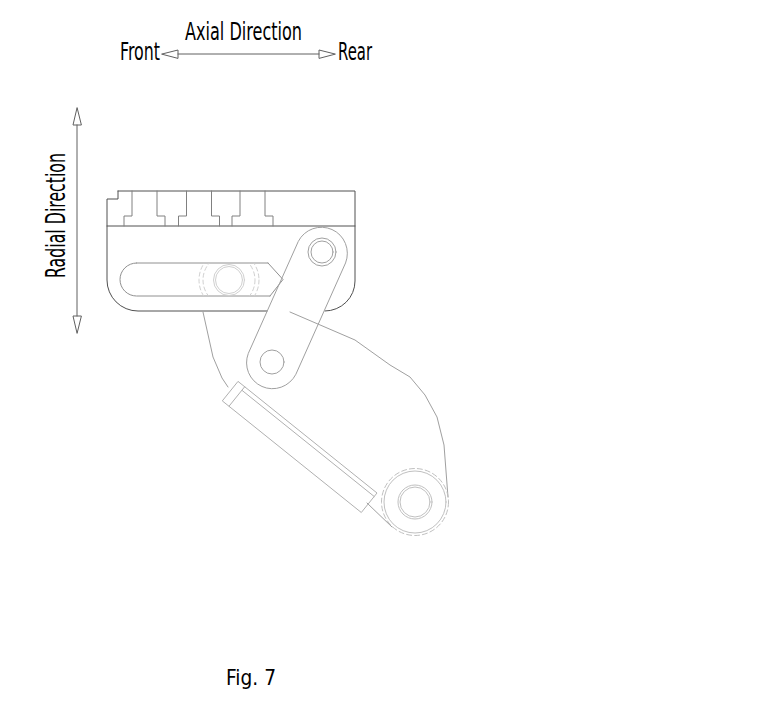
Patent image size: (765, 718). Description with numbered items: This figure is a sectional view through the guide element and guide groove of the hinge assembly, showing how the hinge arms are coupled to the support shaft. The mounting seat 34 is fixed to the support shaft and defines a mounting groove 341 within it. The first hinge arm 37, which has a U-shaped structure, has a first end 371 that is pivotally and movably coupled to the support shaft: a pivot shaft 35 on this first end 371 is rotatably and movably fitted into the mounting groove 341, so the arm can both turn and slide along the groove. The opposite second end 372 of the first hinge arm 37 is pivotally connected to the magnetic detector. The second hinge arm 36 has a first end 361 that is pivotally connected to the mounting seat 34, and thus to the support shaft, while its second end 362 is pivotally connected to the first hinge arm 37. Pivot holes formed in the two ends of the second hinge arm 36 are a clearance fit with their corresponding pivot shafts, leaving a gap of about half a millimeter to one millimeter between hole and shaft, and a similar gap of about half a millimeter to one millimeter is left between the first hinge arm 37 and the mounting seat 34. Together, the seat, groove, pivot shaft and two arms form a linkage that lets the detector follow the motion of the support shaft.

The mounting seat 34 is at (200, 247).
The mounting groove 341 is at (145, 283).
The pivot shaft 35 is at (229, 281).
The second hinge arm 36 is at (355, 340).
The first end of the second hinge arm 361 is at (327, 256).
The lower hole of link arm 362 is at (237, 417).
The first hinge arm 37 is at (320, 428).
The first end of the first hinge arm 371 is at (263, 277).
The second end of the first hinge arm 372 is at (420, 521).